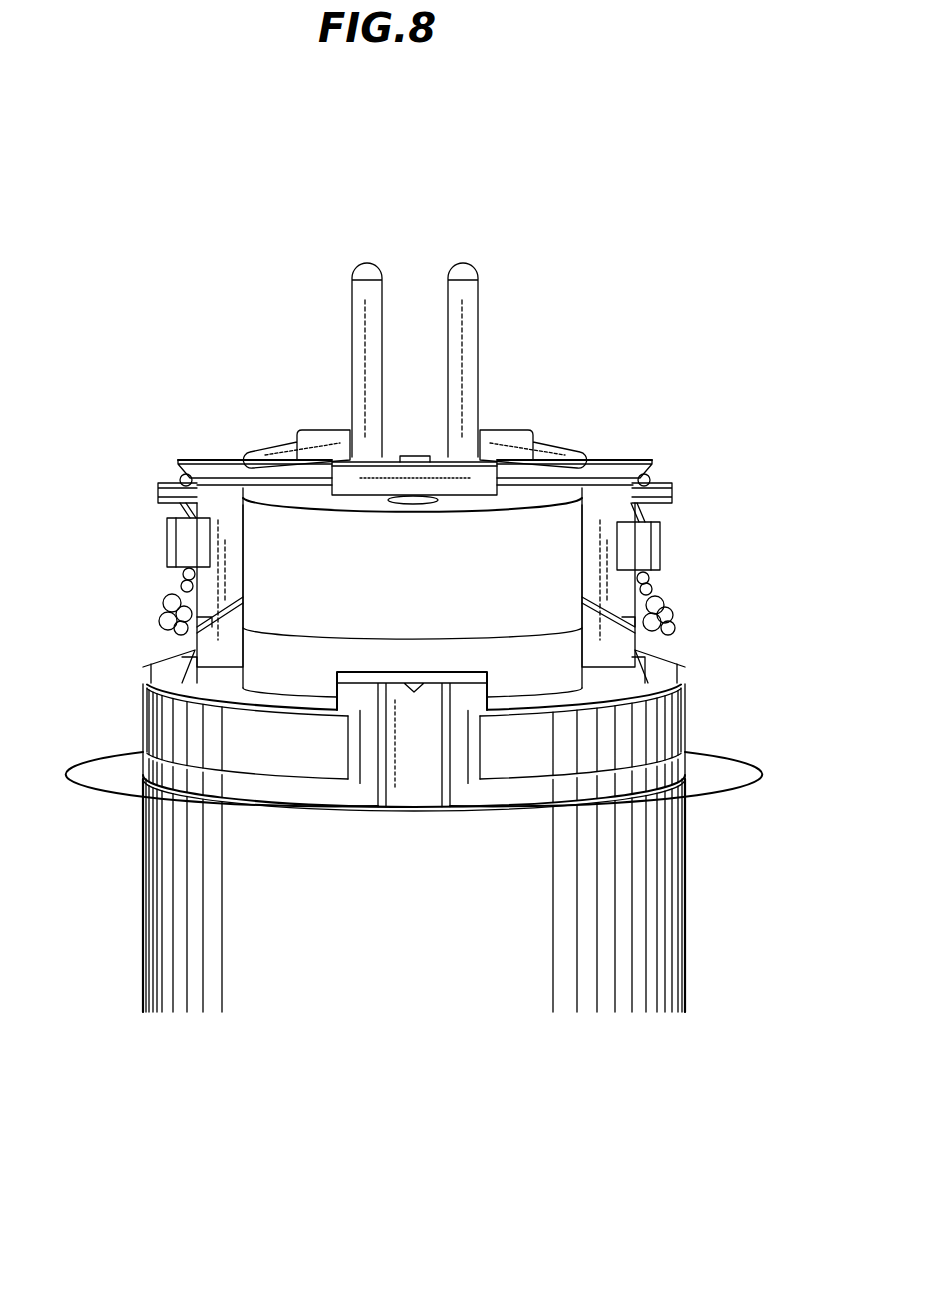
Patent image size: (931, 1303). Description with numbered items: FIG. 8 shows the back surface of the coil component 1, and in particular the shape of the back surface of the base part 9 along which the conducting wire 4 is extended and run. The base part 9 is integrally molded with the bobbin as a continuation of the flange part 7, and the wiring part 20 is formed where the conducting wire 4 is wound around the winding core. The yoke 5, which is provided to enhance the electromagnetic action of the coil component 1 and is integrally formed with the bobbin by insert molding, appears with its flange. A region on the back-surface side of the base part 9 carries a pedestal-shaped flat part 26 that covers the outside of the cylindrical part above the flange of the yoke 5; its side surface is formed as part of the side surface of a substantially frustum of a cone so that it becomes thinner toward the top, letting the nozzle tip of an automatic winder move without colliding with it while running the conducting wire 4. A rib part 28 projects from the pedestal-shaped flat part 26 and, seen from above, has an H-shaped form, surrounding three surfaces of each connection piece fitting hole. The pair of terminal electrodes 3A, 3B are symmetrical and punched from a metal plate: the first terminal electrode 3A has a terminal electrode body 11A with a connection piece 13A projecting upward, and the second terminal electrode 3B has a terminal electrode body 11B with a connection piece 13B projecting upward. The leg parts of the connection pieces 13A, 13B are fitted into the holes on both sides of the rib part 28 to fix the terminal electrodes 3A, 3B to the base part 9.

The coil component 1 is at (148, 217).
The first terminal electrode 3A is at (627, 452).
The second terminal electrode 3B is at (237, 435).
The conducting wire 4 is at (165, 513).
The yoke 5 is at (673, 732).
The flange part 7 is at (660, 781).
The base part 9 is at (527, 403).
The terminal electrode body 11A is at (660, 456).
The terminal electrode body 11B is at (170, 460).
The connection piece 13A is at (467, 320).
The connection piece 13B is at (365, 325).
The wiring part 20 is at (640, 952).
The pedestal-shaped flat part 26 is at (537, 580).
The rib part 28 is at (409, 460).